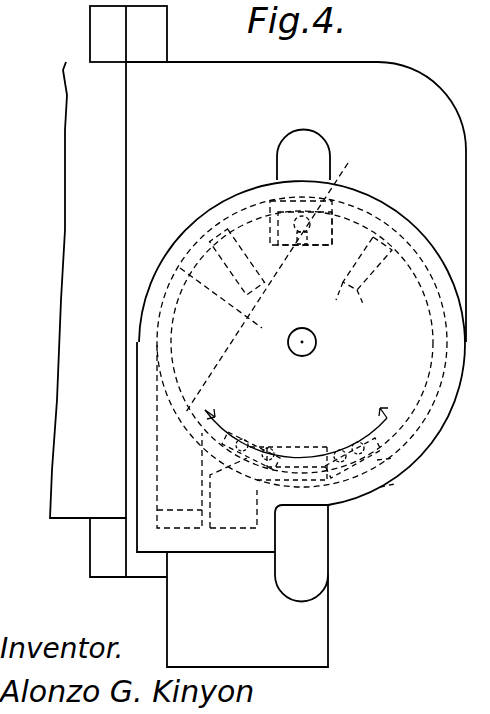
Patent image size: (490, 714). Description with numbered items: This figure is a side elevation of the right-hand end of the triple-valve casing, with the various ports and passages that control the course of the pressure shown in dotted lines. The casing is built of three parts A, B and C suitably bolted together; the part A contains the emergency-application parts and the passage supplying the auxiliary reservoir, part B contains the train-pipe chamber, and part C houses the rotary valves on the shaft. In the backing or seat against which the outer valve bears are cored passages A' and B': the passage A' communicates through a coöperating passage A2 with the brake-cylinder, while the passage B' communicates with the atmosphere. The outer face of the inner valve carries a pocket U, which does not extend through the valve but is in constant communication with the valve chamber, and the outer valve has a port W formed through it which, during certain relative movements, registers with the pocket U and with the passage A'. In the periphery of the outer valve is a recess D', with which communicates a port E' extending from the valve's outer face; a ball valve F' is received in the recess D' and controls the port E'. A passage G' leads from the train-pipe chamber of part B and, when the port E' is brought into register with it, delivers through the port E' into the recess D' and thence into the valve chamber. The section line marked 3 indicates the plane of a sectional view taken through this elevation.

The casing part A is at (108, 291).
The casing part B is at (303, 364).
The casing part C is at (447, 380).
The cored passage B' is at (317, 354).
The recess D' is at (305, 298).
The passage or port E' is at (363, 271).
The ball valve F' is at (277, 278).
The passage G' is at (179, 377).
The cored passage A' is at (301, 449).
The coöperating passage A2 is at (246, 520).
The pocket or passage U is at (377, 460).
The port or passage W is at (380, 487).
The section line 3- 3 is at (297, 427).